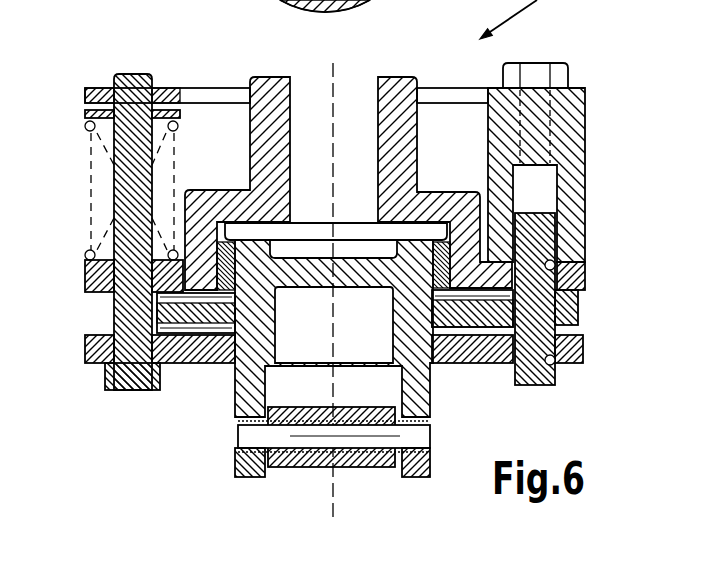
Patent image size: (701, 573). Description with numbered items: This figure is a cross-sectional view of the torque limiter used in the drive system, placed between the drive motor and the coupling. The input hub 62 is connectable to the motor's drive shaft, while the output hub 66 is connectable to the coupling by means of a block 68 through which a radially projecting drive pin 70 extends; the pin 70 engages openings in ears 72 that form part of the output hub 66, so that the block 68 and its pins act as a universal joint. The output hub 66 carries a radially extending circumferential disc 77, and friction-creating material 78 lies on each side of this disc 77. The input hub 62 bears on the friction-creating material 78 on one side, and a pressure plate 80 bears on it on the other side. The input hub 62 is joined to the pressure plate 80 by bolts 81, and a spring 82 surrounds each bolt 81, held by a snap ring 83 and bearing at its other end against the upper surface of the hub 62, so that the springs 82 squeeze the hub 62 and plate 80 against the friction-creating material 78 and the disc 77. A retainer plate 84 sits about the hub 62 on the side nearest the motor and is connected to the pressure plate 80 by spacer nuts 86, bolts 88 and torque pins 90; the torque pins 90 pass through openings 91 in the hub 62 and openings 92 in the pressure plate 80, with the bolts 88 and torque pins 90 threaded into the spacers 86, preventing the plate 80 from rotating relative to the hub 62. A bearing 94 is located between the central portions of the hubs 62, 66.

The input hub 62 is at (392, 83).
The output hub 66 is at (258, 321).
The block 68 is at (317, 460).
The drive pin 70 is at (433, 438).
The ears 72 is at (235, 475).
The disc 77 is at (210, 305).
The friction-creating material 78 is at (458, 293).
The pressure plate 80 is at (85, 350).
The bolts 81 is at (132, 73).
The spring 82 is at (85, 258).
The snap ring 83 is at (85, 120).
The retainer plate 84 is at (162, 97).
The spacer nuts 86 is at (567, 168).
The bolts 88 is at (562, 78).
The torque pins 90 is at (565, 308).
The openings 91 is at (553, 257).
The openings 92 is at (548, 367).
The bearing 94 is at (433, 273).